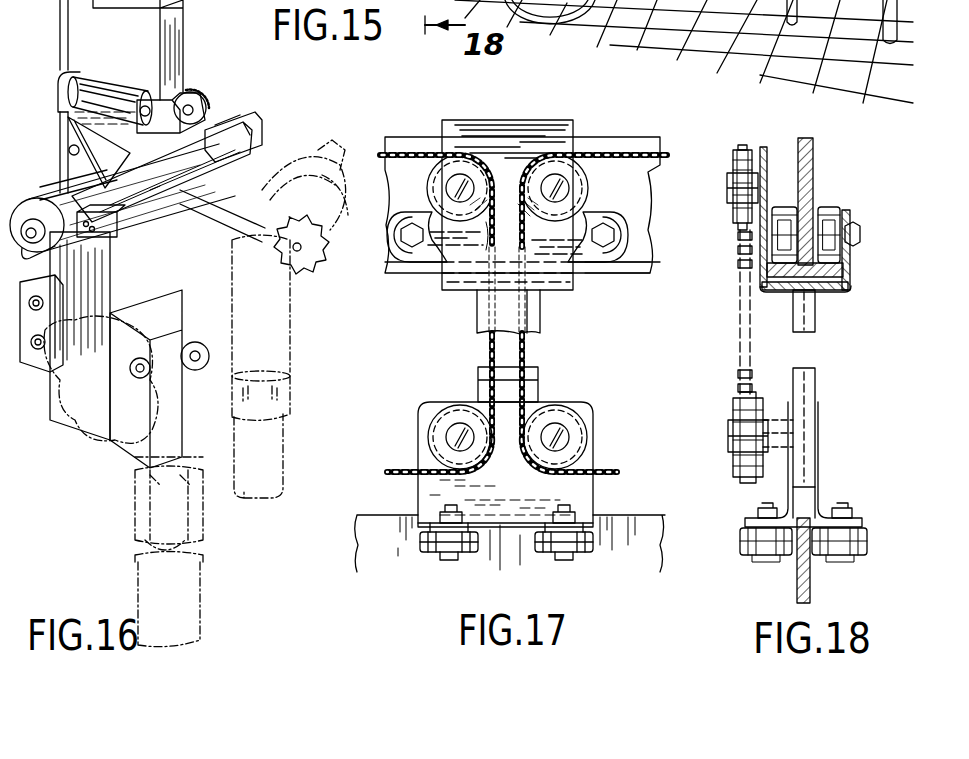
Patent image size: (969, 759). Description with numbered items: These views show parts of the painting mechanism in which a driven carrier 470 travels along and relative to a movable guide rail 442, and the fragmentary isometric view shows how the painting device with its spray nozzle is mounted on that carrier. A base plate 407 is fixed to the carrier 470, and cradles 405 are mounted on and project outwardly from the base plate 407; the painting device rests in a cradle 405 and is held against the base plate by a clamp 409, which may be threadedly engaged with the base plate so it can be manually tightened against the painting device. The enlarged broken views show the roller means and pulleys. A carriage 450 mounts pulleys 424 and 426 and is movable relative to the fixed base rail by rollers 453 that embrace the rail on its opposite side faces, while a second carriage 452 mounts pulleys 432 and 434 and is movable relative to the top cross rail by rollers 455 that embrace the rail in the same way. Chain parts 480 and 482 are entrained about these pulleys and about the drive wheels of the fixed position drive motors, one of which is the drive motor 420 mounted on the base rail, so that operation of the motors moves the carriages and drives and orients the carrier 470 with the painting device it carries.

In FIG. 16, the cradles 405 is at (143, 262).
In FIG. 16, the base plate 407 is at (207, 108).
In FIG. 16, the clamp 409 is at (192, 262).
In FIG. 15, the drive motor 420 is at (693, 6).
In FIG. 17, the pulley 424 is at (560, 417).
In FIG. 18, the pulley 424 is at (740, 425).
In FIG. 17, the pulley 426 is at (452, 417).
In FIG. 17, the pulley 432 is at (560, 177).
In FIG. 18, the pulley 432 is at (738, 170).
In FIG. 17, the pulley 434 is at (455, 170).
In FIG. 16, the movable guide rail 442 is at (131, 50).
In FIG. 17, the carriage 450 is at (583, 490).
In FIG. 18, the carriage 450 is at (818, 445).
In FIG. 17, the carriage 452 is at (583, 258).
In FIG. 18, the carriage 452 is at (848, 290).
In FIG. 17, the rollers 453 is at (434, 548).
In FIG. 18, the rollers 453 is at (745, 548).
In FIG. 17, the rollers 455 is at (398, 230).
In FIG. 18, the rollers 455 is at (782, 205).
In FIG. 16, the driven carrier 470 is at (60, 97).
In FIG. 17, the chain part 480 is at (528, 243).
In FIG. 18, the chain part 480 is at (738, 250).
In FIG. 17, the chain part 482 is at (485, 237).